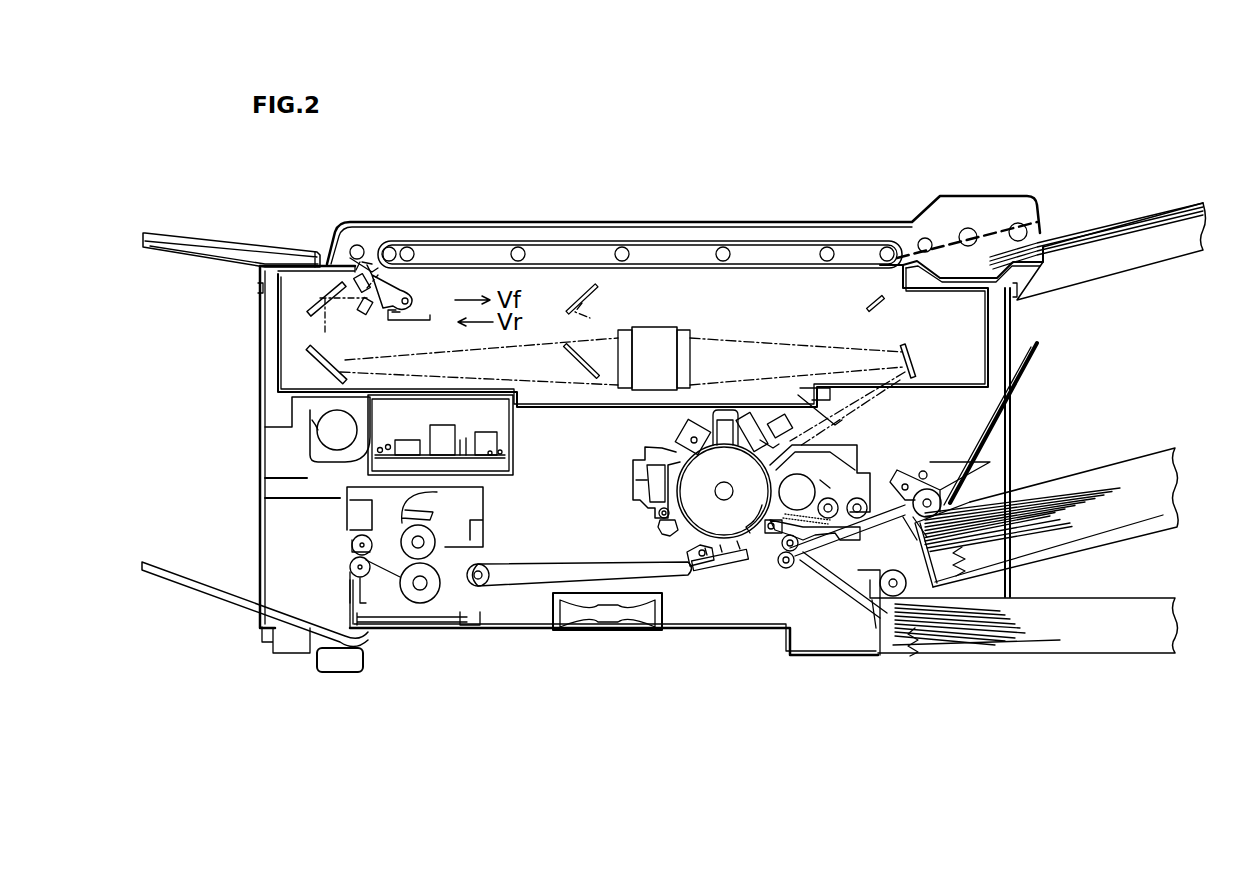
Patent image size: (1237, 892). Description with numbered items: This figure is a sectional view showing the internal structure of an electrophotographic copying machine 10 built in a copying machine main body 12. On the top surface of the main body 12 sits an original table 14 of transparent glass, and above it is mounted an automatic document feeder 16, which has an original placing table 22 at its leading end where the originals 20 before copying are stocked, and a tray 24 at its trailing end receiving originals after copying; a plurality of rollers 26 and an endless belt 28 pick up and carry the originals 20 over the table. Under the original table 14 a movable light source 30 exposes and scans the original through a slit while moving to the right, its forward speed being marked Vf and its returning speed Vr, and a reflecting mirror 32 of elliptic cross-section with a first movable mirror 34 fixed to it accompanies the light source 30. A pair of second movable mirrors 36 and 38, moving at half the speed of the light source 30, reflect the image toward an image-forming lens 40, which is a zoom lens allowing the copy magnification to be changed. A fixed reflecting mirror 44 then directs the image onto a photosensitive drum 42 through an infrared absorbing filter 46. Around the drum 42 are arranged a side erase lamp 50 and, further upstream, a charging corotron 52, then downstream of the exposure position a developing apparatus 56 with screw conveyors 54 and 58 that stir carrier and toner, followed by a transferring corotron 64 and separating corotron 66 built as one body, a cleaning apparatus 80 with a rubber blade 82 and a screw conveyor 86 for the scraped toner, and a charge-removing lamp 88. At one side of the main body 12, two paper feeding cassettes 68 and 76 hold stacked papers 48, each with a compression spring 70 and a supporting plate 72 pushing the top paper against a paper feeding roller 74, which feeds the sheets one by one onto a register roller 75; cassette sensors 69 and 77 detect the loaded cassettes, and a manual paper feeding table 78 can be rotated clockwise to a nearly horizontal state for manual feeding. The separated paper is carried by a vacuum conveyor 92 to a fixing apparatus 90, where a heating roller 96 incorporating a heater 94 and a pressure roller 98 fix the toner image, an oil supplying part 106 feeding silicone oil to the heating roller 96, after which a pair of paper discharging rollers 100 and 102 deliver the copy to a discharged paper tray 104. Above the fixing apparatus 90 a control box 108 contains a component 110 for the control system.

The electrophotographic copying machine 10 is at (490, 200).
The copying machine main body 12 is at (1011, 450).
The original table 14 is at (697, 265).
The automatic document feeder 16 is at (634, 225).
The originals 20 is at (1125, 216).
The original placing table 22 is at (1165, 266).
The tray 24 is at (241, 247).
The rollers 26 is at (359, 245).
The endless belt 28 is at (834, 245).
The light source 30 is at (412, 299).
The reflecting mirror 32 is at (392, 322).
The first movable mirror 34 is at (364, 314).
The movable mirror 36 is at (320, 298).
The movable mirror 38 is at (320, 365).
The image-forming lens 40 is at (668, 327).
The photosensitive drum 42 is at (692, 528).
The fixed reflecting mirror 44 is at (913, 355).
The infrared absorbing filter 46 is at (838, 420).
The papers 48 is at (1088, 480).
The side erase lamp 50 is at (764, 418).
The charging corotron 52 is at (727, 418).
The screw conveyor 54 is at (792, 565).
The developing apparatus 56 is at (866, 484).
The screw conveyor 58 is at (863, 504).
The transferring corotron 64 is at (744, 570).
The separating corotron 66 is at (700, 572).
The paper feeding cassette 68 is at (1112, 655).
The cassette sensor 69 is at (872, 630).
The compression spring 70 is at (966, 549).
The supporting plate 72 is at (1130, 522).
The paper feeding roller 74 is at (932, 490).
The register roller 75 is at (787, 567).
The paper feeding cassette 76 is at (1175, 530).
The cassette sensor 77 is at (913, 536).
The manual paper feeding table 78 is at (1040, 348).
The cleaning apparatus 80 is at (636, 474).
The rubber blade 82 is at (656, 512).
The screw conveyor 86 is at (660, 533).
The charge-removing lamp 88 is at (681, 433).
The fixing apparatus 90 is at (397, 626).
The vacuum conveyor 92 is at (531, 561).
The heater 94 is at (437, 528).
The heating roller 96 is at (404, 520).
The pressure roller 98 is at (426, 606).
The paper discharging roller 100 is at (352, 541).
The paper discharging roller 102 is at (351, 573).
The discharged paper tray 104 is at (225, 596).
The oil supplying part 106 is at (465, 492).
The control box 108 is at (514, 423).
The component for a control system 110 is at (490, 445).